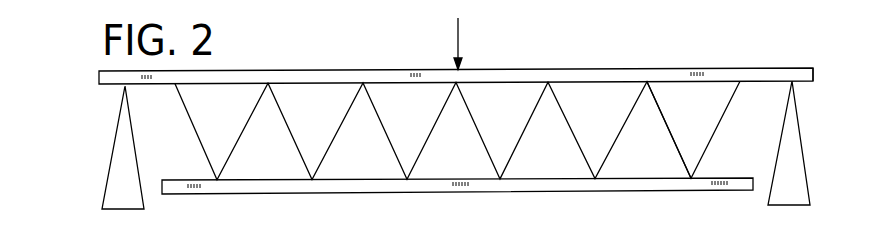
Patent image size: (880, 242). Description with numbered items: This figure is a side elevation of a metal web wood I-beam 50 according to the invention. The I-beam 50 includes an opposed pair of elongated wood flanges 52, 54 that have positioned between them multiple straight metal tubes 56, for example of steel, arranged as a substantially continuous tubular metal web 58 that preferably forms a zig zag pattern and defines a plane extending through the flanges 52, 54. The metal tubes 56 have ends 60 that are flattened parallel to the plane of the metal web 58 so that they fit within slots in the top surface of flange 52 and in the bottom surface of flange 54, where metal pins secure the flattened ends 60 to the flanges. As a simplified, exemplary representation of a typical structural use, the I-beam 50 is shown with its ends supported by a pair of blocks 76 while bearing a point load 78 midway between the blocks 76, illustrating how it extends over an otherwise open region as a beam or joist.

The metal web wood I-beam 50 is at (678, 51).
The elongated wood flange 52 is at (718, 195).
The elongated wood flange 54 is at (794, 63).
The straight metal tube 56 is at (331, 143).
The tubular metal web 58 is at (670, 123).
The flattened end 60 is at (407, 179).
The block 76 is at (112, 158).
The point load 78 is at (460, 40).